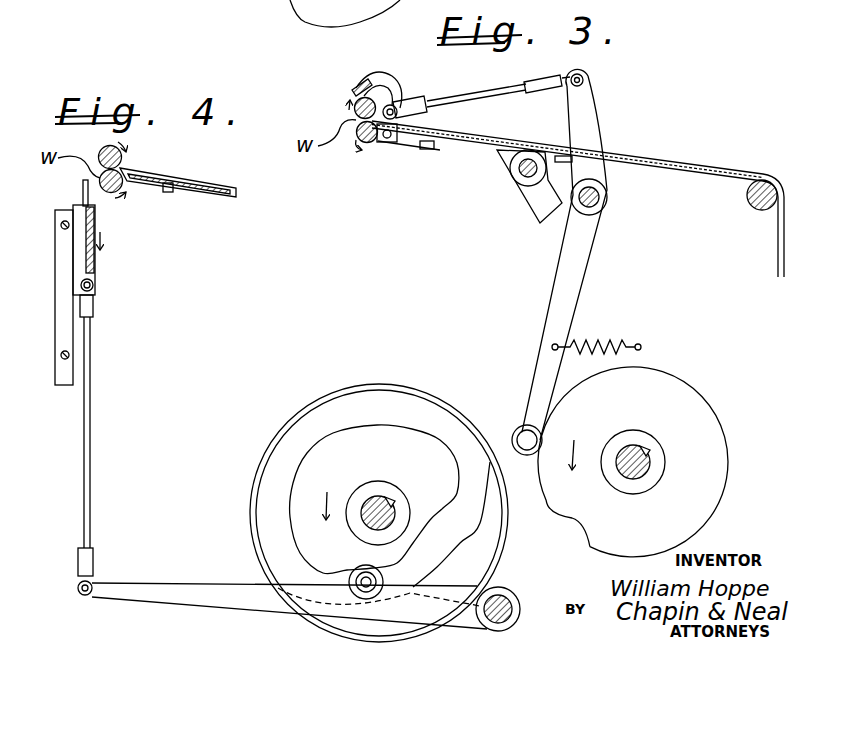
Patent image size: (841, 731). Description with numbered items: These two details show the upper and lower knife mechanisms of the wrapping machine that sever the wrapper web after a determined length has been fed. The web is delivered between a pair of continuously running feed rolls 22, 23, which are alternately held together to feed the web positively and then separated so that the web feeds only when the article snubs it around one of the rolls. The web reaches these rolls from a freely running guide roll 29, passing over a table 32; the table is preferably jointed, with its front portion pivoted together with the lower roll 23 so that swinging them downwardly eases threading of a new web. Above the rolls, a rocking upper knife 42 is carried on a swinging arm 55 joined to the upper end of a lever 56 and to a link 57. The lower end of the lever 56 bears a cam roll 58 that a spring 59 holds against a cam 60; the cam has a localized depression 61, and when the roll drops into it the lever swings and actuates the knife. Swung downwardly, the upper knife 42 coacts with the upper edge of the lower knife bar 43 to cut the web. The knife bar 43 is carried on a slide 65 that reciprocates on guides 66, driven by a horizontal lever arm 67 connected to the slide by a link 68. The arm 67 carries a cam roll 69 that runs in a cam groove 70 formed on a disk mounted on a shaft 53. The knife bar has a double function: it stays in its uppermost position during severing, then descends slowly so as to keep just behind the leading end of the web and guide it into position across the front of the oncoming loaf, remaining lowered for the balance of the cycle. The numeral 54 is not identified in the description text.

In FIG. 3, the upper feed roll 22 is at (354, 113).
In FIG. 4, the upper feed roll 22 is at (101, 152).
In FIG. 3, the lower feed roll 23 is at (372, 145).
In FIG. 4, the lower feed roll 23 is at (128, 185).
In FIG. 3, the guide roll 29 is at (752, 206).
In FIG. 3, the table 32 is at (668, 170).
In FIG. 4, the table 32 is at (213, 195).
In FIG. 3, the upper knife 42 is at (358, 90).
In FIG. 4, the lower knife bar 43 is at (95, 262).
In FIG. 3, the shaft 53 is at (641, 478).
In FIG. 4, the shaft 53 is at (378, 498).
In FIG. 3, the drum 54 is at (290, 10).
In FIG. 3, the swinging arm 55 is at (394, 92).
In FIG. 3, the lever 56 is at (598, 136).
In FIG. 3, the link 57 is at (488, 92).
In FIG. 3, the cam roll 58 is at (516, 430).
In FIG. 3, the spring 59 is at (614, 342).
In FIG. 3, the cam 60 is at (690, 402).
In FIG. 3, the localized depression 61 is at (578, 524).
In FIG. 4, the slide 65 is at (80, 270).
In FIG. 4, the guides 66 is at (83, 186).
In FIG. 4, the horizontal lever arm 67 is at (171, 582).
In FIG. 4, the link 68 is at (88, 482).
In FIG. 4, the cam roll 69 is at (360, 568).
In FIG. 4, the cam groove 70 is at (300, 440).